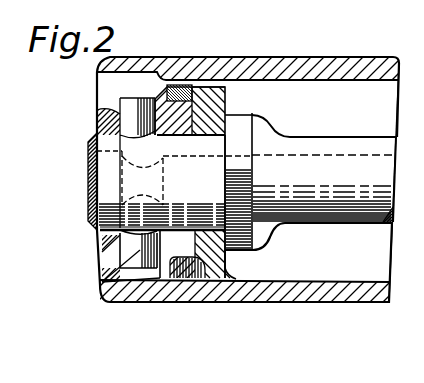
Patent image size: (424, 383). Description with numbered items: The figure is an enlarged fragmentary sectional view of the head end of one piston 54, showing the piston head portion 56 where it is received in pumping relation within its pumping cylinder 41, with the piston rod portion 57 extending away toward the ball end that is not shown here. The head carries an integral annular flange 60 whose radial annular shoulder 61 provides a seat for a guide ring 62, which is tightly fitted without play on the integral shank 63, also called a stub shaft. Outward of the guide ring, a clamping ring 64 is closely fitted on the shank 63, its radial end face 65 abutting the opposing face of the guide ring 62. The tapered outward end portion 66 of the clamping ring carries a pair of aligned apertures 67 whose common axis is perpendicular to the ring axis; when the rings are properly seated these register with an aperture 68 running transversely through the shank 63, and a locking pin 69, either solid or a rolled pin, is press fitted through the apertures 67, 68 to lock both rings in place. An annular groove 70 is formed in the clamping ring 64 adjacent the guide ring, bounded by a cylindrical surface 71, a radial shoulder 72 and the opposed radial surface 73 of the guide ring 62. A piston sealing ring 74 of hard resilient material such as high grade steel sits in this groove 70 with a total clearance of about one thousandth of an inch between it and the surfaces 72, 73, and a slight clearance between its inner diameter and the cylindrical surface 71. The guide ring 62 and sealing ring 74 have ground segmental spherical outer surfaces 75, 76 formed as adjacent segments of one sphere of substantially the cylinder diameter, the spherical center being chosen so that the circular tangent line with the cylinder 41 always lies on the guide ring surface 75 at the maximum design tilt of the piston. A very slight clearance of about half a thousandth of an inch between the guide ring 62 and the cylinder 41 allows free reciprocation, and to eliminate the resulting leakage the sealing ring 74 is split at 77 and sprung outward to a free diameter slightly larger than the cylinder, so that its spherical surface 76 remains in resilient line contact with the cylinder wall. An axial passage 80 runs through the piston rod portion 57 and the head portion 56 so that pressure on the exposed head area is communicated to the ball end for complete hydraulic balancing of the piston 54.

The pumping cylinder 41 is at (372, 90).
The piston 54 is at (323, 250).
The piston head portion 56 is at (290, 66).
The piston rod portion 57 is at (358, 133).
The annular flange 60 is at (268, 231).
The radial annular shoulder 61 is at (226, 166).
The guide ring 62 is at (230, 268).
The shank 63 is at (215, 141).
The clamping ring 64 is at (106, 285).
The radial end face 65 is at (207, 275).
The tapered outward end portion 66 is at (100, 252).
The aperture 67 is at (126, 120).
The aperture 68 is at (97, 155).
The locking pin 69 is at (122, 267).
The annular groove 70 is at (170, 276).
The cylindrical surface 71 is at (202, 82).
The radial shoulder 72 is at (178, 84).
The radial surface 73 is at (185, 280).
The piston sealing ring 74 is at (232, 101).
The spherical outer surface 75 is at (233, 262).
The spherical outer surface 76 is at (160, 280).
The split 77 is at (128, 284).
The axial passage 80 is at (327, 194).